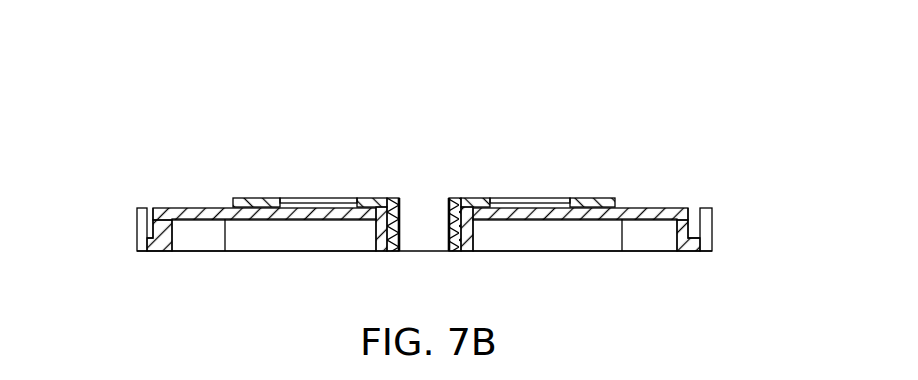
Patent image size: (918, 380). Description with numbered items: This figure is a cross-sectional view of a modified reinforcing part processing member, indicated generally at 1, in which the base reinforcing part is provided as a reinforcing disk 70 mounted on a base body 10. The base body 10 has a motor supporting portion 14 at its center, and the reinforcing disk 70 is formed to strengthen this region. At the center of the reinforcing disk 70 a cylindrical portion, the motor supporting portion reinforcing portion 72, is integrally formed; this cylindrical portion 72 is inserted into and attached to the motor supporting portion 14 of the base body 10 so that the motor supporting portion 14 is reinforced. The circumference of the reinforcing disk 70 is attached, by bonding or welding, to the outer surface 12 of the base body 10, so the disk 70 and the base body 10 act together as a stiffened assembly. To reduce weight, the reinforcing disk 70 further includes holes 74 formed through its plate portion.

The semiconductor package assembly 1 is at (479, 58).
The base body 10 is at (578, 221).
The outer surface 12 is at (660, 207).
The motor supporting portion 14 is at (468, 229).
The reinforcing disk 70 is at (578, 198).
The motor supporting portion reinforcing portion 72 is at (448, 228).
The holes 74 is at (502, 198).